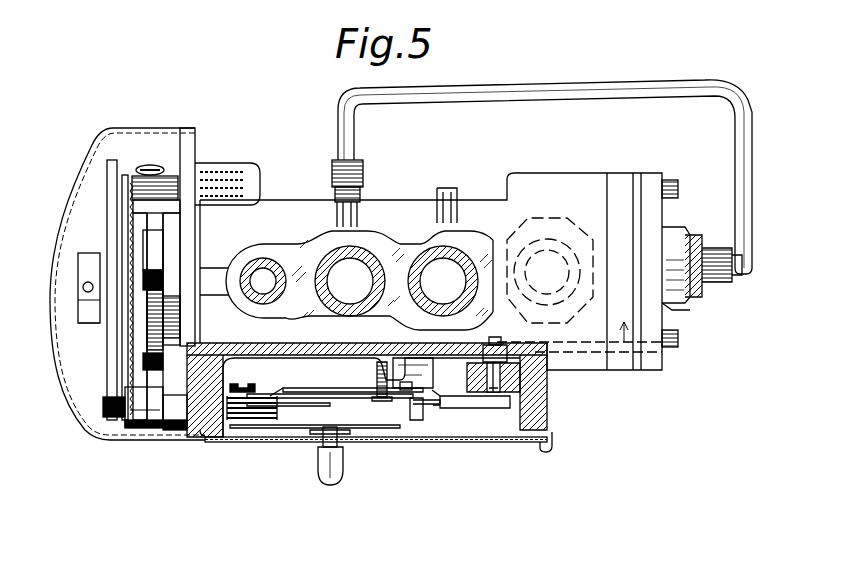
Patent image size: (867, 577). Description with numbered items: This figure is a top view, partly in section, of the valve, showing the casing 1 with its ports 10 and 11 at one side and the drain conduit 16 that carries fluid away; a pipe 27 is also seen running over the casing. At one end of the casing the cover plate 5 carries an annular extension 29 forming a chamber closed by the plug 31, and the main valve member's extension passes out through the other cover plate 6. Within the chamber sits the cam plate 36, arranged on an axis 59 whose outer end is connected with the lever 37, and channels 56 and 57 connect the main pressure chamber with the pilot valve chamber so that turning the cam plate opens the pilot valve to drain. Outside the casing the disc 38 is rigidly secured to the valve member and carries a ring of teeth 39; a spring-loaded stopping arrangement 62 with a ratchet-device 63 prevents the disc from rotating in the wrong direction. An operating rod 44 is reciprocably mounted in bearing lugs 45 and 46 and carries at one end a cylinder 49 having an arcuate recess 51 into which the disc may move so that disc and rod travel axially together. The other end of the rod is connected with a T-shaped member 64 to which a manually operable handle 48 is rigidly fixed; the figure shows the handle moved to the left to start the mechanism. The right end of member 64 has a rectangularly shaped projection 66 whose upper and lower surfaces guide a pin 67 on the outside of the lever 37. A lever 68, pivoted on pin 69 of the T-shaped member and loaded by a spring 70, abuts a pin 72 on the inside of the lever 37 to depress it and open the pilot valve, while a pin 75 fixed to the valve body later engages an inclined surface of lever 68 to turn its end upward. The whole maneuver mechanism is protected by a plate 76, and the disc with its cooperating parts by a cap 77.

The casing 1 is at (567, 168).
The cover plate 5 is at (665, 213).
The cover plate 6 is at (160, 340).
The port 10 is at (348, 239).
The port 11 is at (450, 252).
The drain conduit 16 is at (530, 237).
The fuel pipe 27 is at (688, 78).
The annular extension 29 is at (675, 307).
The plug 31 is at (700, 300).
The cam plate 36 is at (497, 357).
The lever 37 is at (470, 408).
The disc 38 is at (113, 160).
The ring of teeth 39 is at (130, 230).
The operating rod 44 is at (173, 420).
The bearing lug 45 is at (187, 413).
The bearing lug 46 is at (430, 372).
The handle 48 is at (333, 474).
The cylinder 49 is at (133, 425).
The arcuate recess 51 is at (103, 413).
The channel 56 is at (642, 360).
The channel 57 is at (597, 352).
The axis 59 is at (500, 397).
The spring-loaded stopping arrangement 62 is at (170, 177).
The ratchet-device 63 is at (127, 180).
The T-shaped member 64 is at (320, 427).
The rectangularly shaped projection 66 is at (405, 393).
The pin 67 is at (416, 413).
The lever 68 is at (353, 395).
The pin 69 is at (243, 386).
The spring 70 is at (297, 403).
The pin 72 is at (413, 383).
The pin 75 is at (382, 399).
The plate 76 is at (323, 432).
The cap 77 is at (73, 393).